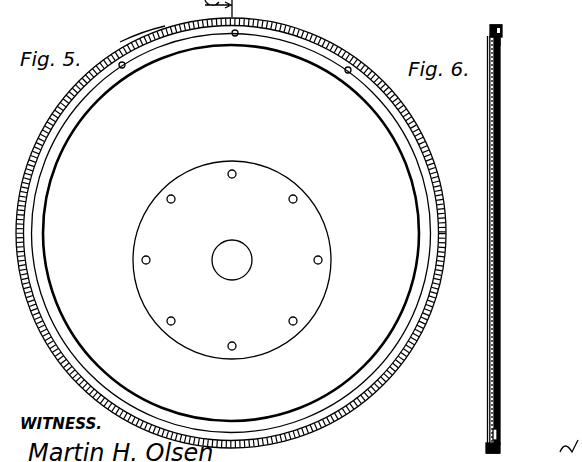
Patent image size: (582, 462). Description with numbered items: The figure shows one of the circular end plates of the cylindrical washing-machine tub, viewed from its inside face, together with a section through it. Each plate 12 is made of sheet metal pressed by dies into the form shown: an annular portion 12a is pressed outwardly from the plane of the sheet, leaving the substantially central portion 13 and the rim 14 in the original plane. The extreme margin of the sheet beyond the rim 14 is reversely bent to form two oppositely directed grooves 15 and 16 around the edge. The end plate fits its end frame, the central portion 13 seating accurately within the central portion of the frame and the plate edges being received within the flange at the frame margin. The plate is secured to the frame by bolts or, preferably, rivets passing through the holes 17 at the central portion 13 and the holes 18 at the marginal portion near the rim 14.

In FIG. 5, the plate 12 is at (62, 108).
In FIG. 6, the plate 12 is at (500, 116).
In FIG. 5, the annular portion 12a is at (180, 128).
In FIG. 5, the central portion 13 is at (232, 260).
In FIG. 6, the central portion 13 is at (501, 211).
In FIG. 5, the rim 14 is at (397, 125).
In FIG. 5, the groove 15 is at (407, 358).
In FIG. 6, the groove 15 is at (520, 430).
In FIG. 5, the groove 16 is at (152, 22).
In FIG. 6, the groove 16 is at (487, 448).
In FIG. 5, the holes 17 is at (231, 178).
In FIG. 6, the holes 17 is at (530, 347).
In FIG. 5, the holes 18 is at (345, 71).
In FIG. 6, the holes 18 is at (500, 42).